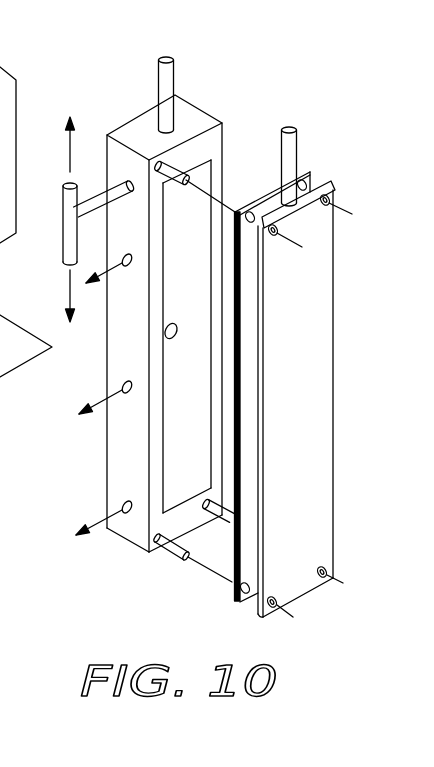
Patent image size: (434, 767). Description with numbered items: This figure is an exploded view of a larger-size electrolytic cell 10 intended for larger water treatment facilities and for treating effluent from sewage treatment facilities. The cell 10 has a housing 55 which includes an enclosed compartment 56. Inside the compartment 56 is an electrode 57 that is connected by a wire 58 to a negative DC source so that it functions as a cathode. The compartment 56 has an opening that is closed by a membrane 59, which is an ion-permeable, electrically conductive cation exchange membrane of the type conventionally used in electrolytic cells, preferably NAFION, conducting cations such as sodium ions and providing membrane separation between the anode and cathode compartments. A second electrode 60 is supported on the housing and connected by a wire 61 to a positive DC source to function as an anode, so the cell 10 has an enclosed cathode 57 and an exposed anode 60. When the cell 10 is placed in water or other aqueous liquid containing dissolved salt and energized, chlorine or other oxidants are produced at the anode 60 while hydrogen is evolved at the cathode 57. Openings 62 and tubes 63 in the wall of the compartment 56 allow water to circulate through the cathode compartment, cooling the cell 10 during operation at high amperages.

The cell 10 is at (305, 621).
The housing 55 is at (115, 118).
The enclosed compartment 56 is at (115, 438).
The electrode 57 is at (200, 392).
The wire 58 is at (163, 77).
The membrane 59 is at (160, 334).
The electrode 60 is at (317, 392).
The wire 61 is at (290, 147).
The openings 62 is at (133, 522).
The tubes 63 is at (63, 240).